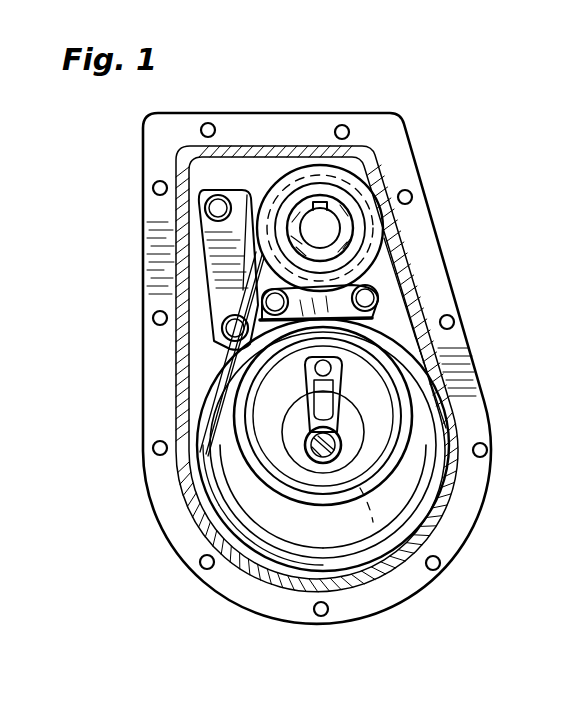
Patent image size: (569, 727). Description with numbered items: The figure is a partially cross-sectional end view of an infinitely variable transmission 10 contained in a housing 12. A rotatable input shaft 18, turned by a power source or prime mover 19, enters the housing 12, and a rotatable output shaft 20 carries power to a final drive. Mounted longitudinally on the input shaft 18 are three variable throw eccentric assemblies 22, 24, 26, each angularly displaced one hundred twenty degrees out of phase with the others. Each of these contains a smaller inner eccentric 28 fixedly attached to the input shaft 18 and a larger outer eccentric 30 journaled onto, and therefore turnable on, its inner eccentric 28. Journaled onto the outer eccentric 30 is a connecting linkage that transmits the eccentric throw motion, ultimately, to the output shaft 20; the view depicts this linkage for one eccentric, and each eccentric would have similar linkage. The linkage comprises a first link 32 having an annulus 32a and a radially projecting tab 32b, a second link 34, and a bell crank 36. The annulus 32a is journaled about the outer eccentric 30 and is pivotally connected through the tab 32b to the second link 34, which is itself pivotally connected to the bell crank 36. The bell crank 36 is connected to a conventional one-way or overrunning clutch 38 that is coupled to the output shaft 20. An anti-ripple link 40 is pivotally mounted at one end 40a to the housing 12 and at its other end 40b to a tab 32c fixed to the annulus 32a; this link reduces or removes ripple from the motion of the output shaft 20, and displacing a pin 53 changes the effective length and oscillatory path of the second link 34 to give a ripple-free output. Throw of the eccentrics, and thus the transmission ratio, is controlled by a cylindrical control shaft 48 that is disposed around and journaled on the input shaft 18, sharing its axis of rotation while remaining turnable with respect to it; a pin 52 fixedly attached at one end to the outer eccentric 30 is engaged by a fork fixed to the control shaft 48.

The transmission 10 is at (185, 104).
The housing 12 is at (387, 121).
The input shaft 18 is at (192, 522).
The prime mover 19 is at (413, 577).
The output shaft 20 is at (340, 216).
The variable throw eccentric assembly 22 is at (228, 436).
The variable throw eccentric assembly 24 is at (398, 516).
The variable throw eccentric assembly 26 is at (232, 562).
The inner eccentric 28 is at (405, 400).
The outer eccentric 30 is at (370, 370).
The first link 32 is at (235, 485).
The annulus 32a is at (455, 398).
The radially projecting tab 32b is at (300, 370).
The tab 32c is at (405, 292).
The second link 34 is at (215, 228).
The bell crank 36 is at (247, 190).
The one-way clutch 38 is at (335, 190).
The anti-ripple link 40 is at (285, 267).
The end of anti-ripple link 40a is at (376, 292).
The end of anti-ripple link 40b is at (262, 300).
The control shaft 48 is at (333, 462).
The pin 52 is at (258, 406).
The pin 53 is at (296, 332).